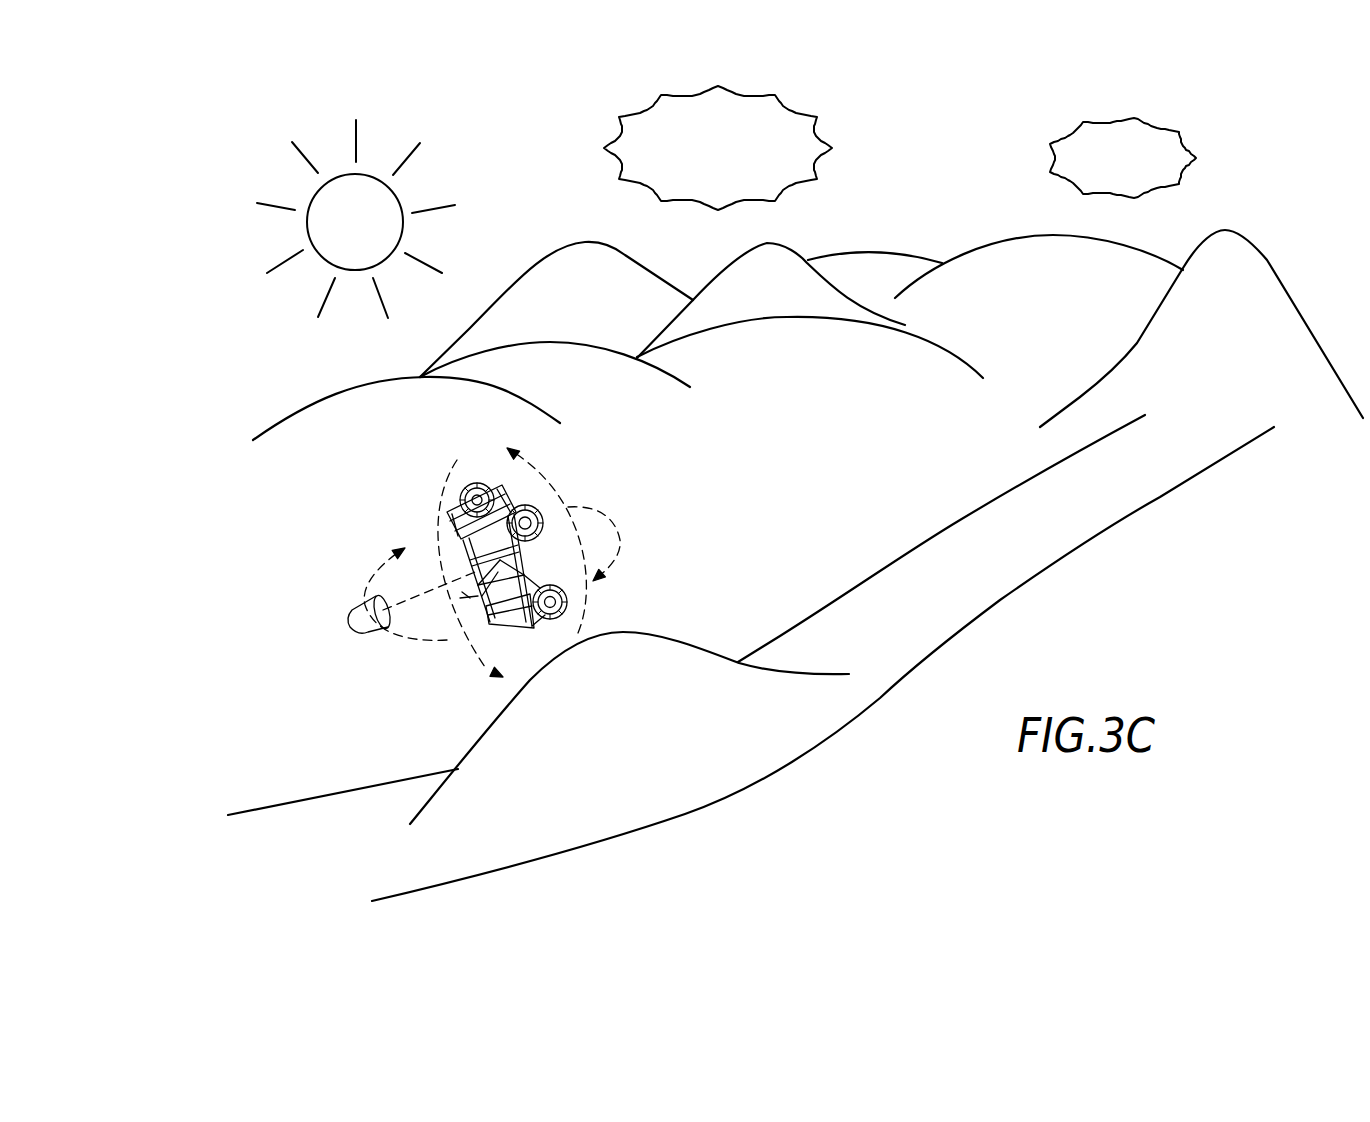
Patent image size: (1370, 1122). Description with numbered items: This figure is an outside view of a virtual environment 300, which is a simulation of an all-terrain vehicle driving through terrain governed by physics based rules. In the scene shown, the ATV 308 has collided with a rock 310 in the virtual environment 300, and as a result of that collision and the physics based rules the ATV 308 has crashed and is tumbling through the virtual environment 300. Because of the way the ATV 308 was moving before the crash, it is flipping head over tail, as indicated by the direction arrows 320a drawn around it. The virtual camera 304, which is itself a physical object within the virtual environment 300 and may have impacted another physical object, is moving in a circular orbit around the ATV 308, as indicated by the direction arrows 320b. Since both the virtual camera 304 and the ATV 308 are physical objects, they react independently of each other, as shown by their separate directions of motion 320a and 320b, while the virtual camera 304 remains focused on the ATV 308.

The virtual environment 300 is at (871, 168).
The virtual camera 304 is at (362, 605).
The ATV 308 is at (477, 483).
The rock 310 is at (660, 633).
The direction arrows 320a is at (440, 485).
The direction arrows 320b is at (378, 568).